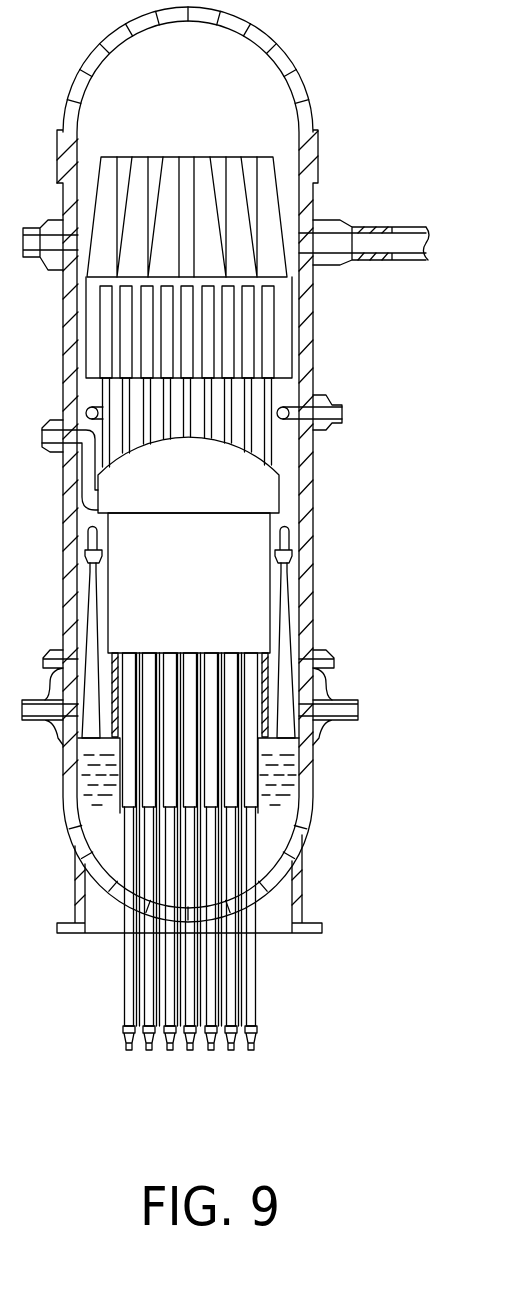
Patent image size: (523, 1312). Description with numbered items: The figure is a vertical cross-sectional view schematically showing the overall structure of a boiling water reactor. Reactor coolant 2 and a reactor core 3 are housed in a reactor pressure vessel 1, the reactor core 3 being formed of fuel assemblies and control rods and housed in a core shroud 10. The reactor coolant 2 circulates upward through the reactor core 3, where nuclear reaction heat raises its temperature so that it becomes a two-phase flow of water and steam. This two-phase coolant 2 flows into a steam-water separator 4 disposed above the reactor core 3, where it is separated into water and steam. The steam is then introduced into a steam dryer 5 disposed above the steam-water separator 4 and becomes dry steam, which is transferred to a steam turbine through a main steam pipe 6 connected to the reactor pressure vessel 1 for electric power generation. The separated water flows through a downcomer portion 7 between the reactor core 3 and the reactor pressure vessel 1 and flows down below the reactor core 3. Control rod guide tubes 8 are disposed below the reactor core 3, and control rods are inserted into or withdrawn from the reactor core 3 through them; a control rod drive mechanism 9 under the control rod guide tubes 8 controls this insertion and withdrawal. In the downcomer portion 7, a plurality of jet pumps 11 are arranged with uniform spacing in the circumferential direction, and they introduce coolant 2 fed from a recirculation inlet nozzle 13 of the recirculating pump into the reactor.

The reactor pressure vessel 1 is at (182, 470).
The reactor coolant 2 is at (83, 789).
The reactor core 3 is at (255, 522).
The steam-water separator 4 is at (280, 330).
The steam dryer 5 is at (202, 155).
The main steam pipe 6 is at (413, 233).
The downcomer portion 7 is at (88, 538).
The control rod guide tubes 8 is at (233, 795).
The control rod drive mechanism 9 is at (117, 936).
The core shroud 10 is at (268, 690).
The jet pumps 11 is at (291, 578).
The recirculation inlet nozzle 13 is at (322, 650).